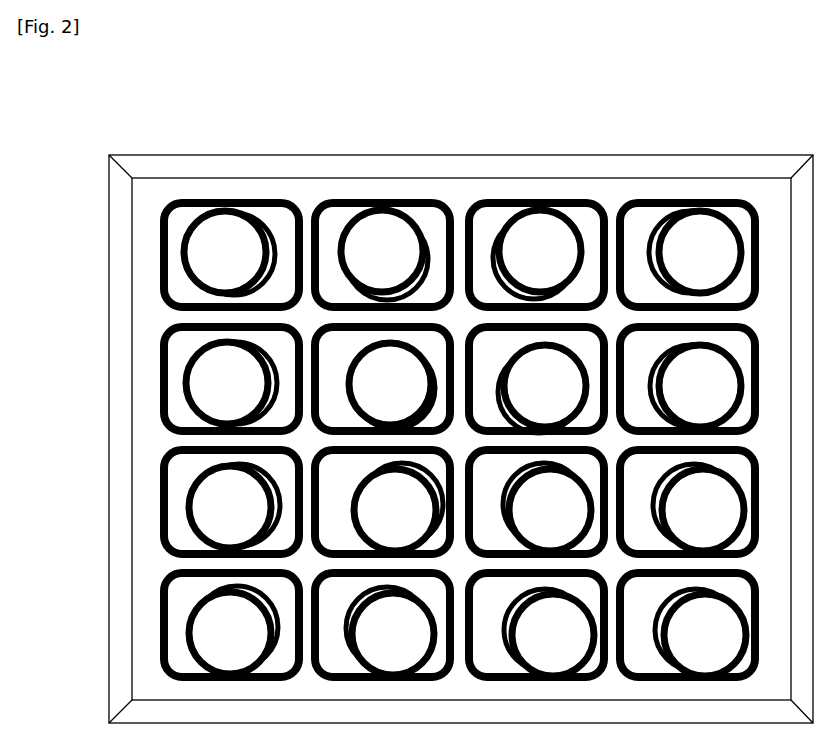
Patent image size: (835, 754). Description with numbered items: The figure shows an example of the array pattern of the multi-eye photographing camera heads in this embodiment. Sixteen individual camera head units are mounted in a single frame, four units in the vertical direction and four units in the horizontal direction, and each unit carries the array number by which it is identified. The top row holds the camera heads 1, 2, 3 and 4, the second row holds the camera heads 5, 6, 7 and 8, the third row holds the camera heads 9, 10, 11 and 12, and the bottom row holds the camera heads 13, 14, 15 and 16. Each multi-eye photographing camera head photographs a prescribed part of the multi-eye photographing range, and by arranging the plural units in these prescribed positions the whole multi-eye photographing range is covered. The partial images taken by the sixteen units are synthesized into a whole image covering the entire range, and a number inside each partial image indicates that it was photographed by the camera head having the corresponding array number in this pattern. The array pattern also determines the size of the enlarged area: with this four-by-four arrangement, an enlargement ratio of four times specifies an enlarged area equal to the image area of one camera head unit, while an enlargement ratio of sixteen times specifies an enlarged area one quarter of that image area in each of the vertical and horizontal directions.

The multi-eye photographing camera head 1 is at (231, 255).
The multi-eye photographing camera head 2 is at (382, 255).
The multi-eye photographing camera head 3 is at (536, 255).
The multi-eye photographing camera head 4 is at (687, 255).
The multi-eye photographing camera head 5 is at (231, 379).
The multi-eye photographing camera head 6 is at (382, 379).
The multi-eye photographing camera head 7 is at (536, 380).
The multi-eye photographing camera head 8 is at (687, 379).
The multi-eye photographing camera head 9 is at (231, 502).
The multi-eye photographing camera head 10 is at (382, 502).
The multi-eye photographing camera head 11 is at (536, 502).
The multi-eye photographing camera head 12 is at (687, 502).
The multi-eye photographing camera head 13 is at (231, 625).
The multi-eye photographing camera head 14 is at (382, 625).
The multi-eye photographing camera head 15 is at (536, 625).
The multi-eye photographing camera head 16 is at (687, 625).